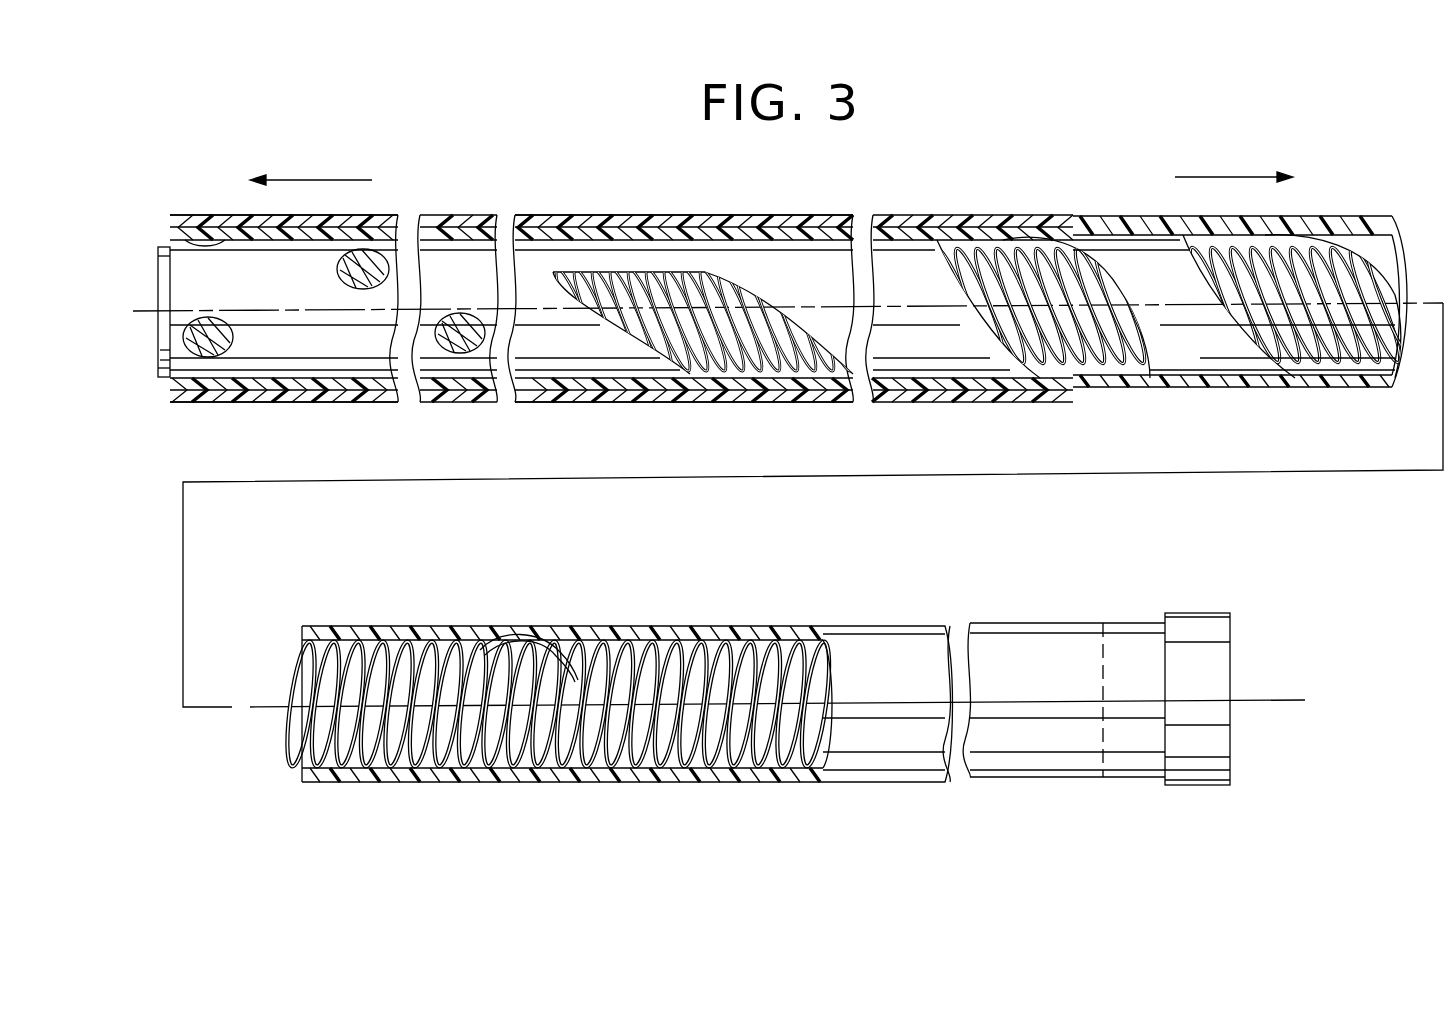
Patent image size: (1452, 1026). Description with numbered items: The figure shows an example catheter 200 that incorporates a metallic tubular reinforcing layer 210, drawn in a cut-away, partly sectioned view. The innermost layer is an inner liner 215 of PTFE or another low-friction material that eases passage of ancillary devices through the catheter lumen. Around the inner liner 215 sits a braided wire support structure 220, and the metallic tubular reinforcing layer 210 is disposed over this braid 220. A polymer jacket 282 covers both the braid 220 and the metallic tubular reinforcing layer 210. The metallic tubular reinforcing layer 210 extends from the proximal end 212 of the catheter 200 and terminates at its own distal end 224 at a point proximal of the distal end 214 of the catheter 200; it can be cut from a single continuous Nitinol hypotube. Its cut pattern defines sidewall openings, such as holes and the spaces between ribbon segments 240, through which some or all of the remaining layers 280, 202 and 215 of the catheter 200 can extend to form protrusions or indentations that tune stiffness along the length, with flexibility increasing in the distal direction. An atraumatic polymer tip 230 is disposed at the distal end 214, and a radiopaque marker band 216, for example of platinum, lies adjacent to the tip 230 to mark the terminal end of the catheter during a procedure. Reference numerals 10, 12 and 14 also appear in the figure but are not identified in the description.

The catheter / elongate device 10 is at (148, 311).
The proximal direction 12 is at (308, 180).
The distal direction 14 is at (1225, 177).
The catheter 200 is at (1097, 215).
The layer 202 is at (962, 250).
The metallic tubular reinforcing layer 210 is at (748, 255).
The proximal end 212 is at (170, 233).
The distal end 214 is at (1232, 660).
The inner liner 215 is at (165, 356).
The radiopaque marker band 216 is at (1120, 620).
The braided wire support structure 220 is at (352, 289).
The distal end of the metallic tubular reinforcing layer 224 is at (553, 645).
The atraumatic polymer tip 230 is at (1200, 785).
The ribbon segment 240 is at (1193, 353).
The layer 280 is at (563, 215).
The polymer jacket 282 is at (733, 780).